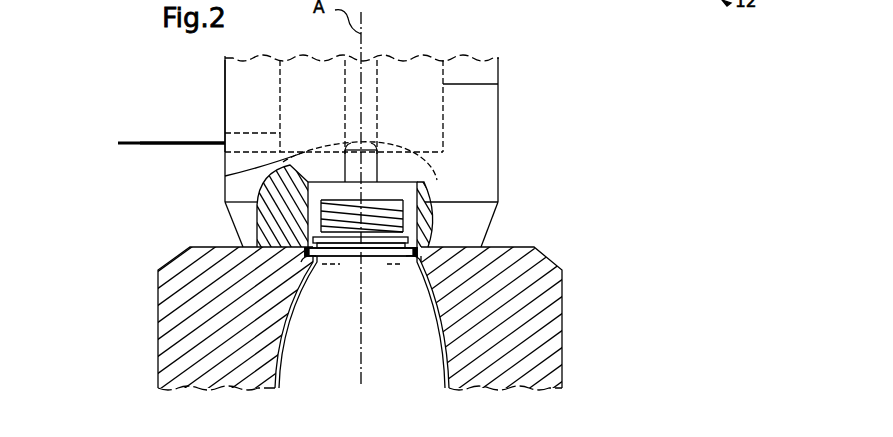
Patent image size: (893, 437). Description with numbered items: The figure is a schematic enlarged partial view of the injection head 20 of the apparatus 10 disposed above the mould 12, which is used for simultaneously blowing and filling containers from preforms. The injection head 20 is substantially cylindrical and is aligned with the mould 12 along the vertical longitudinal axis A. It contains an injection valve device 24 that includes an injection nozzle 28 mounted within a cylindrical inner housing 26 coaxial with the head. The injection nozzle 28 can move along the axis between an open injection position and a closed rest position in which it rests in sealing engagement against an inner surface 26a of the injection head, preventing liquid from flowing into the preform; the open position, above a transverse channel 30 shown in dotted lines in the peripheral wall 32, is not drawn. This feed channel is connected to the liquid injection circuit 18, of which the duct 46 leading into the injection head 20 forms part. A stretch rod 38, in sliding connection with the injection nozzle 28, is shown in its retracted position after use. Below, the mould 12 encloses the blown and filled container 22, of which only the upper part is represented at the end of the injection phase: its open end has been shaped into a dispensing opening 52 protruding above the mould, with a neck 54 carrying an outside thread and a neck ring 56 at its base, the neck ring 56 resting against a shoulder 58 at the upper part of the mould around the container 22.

The apparatus 10 is at (605, 98).
The mould 12 is at (564, 310).
The liquid injection circuit 18 is at (134, 141).
The injection head 20 is at (524, 77).
The blown and filled container 22 is at (345, 323).
The injection valve device 24 is at (331, 99).
The inner housing 26 is at (498, 84).
The inner surface 26a is at (225, 172).
The injection nozzle 28 is at (395, 165).
The transverse channel 30 is at (237, 133).
The peripheral wall 32 is at (235, 88).
The stretch rod 38 is at (366, 82).
The duct 46 is at (147, 142).
The dispensing opening 52 is at (325, 180).
The neck 54 is at (320, 201).
The neck ring 56 is at (335, 257).
The shoulder 58 is at (434, 258).